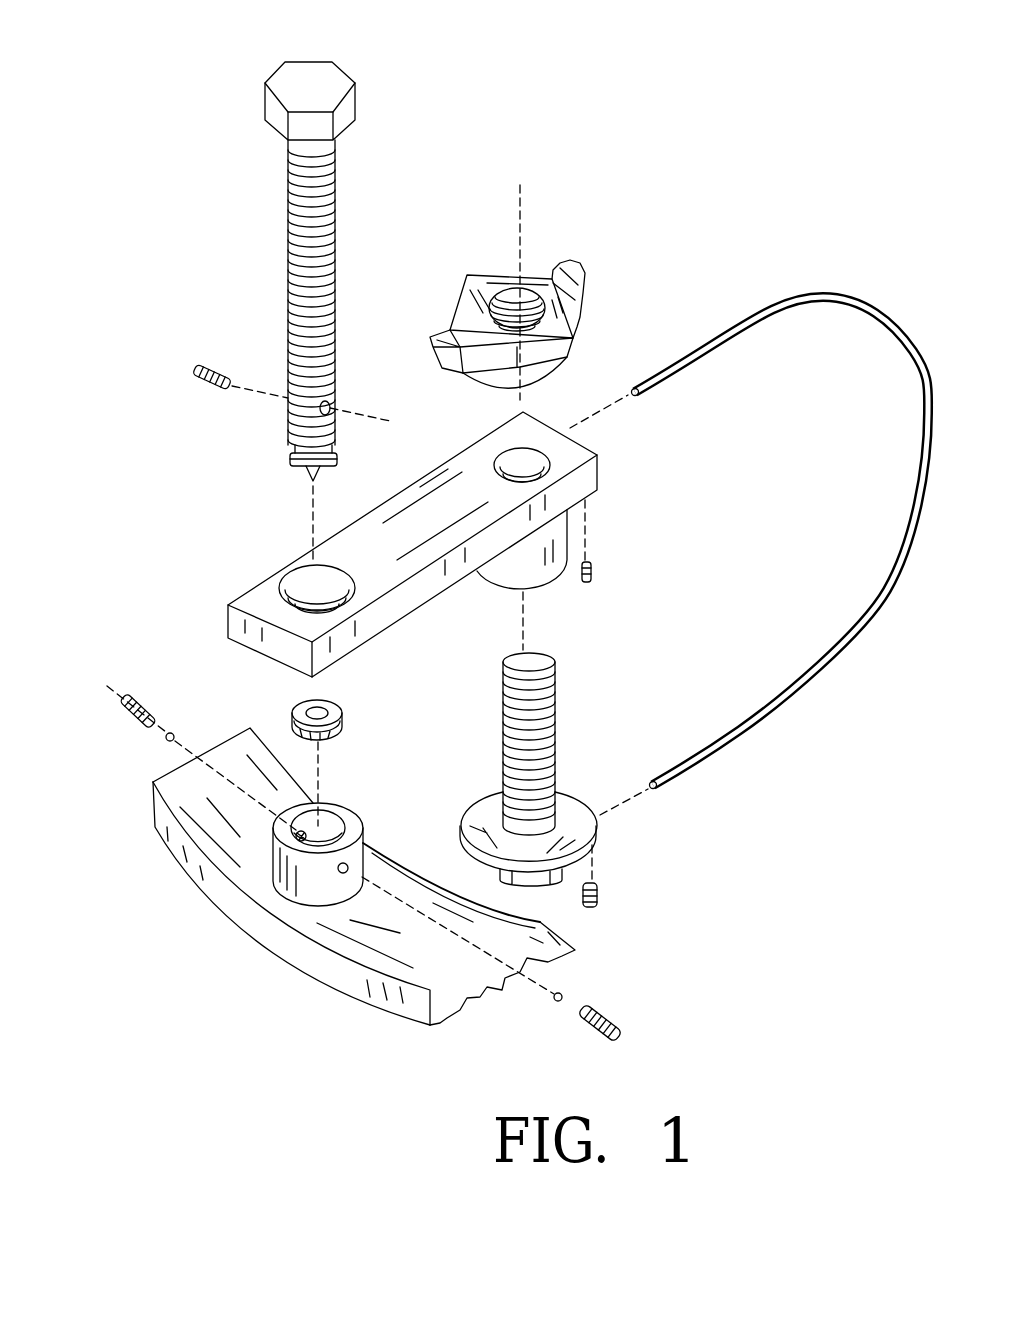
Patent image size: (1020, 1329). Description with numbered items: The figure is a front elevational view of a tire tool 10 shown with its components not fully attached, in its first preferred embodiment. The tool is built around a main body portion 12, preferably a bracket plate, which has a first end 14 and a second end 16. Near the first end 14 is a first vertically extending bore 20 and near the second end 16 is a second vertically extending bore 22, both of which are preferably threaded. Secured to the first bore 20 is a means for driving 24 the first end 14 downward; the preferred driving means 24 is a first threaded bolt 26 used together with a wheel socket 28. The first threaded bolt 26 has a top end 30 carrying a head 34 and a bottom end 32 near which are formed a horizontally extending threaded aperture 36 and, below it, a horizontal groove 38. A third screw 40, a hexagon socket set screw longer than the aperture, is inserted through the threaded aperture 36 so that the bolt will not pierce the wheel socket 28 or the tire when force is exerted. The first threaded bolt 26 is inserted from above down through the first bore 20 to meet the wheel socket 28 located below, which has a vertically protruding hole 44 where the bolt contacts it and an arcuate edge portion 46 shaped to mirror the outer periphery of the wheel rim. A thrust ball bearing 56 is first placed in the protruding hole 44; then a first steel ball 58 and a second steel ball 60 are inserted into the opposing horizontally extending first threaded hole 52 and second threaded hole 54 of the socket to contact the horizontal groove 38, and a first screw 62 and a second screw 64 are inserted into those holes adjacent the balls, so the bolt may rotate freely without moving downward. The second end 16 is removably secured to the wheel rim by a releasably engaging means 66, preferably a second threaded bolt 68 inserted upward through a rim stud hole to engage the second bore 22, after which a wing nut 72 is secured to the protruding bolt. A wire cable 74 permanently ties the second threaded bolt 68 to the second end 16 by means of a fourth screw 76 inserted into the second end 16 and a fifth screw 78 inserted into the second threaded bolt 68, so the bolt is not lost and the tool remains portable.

The tire tool 10 is at (150, 583).
The main body portion 12 is at (405, 525).
The first end 14 is at (218, 619).
The second end 16 is at (560, 408).
The first vertically extending bore 20 is at (300, 585).
The second vertically extending bore 22 is at (513, 450).
The means for driving 24 is at (215, 181).
The first threaded bolt 26 is at (327, 207).
The wheel socket 28 is at (341, 866).
The top end 30 is at (278, 67).
The bottom end 32 is at (340, 473).
The head 34 is at (327, 90).
The horizontally extending threaded aperture 36 is at (335, 405).
The horizontal groove 38 is at (295, 452).
The third screw 40 is at (200, 371).
The vertically protruding hole 44 is at (288, 853).
The arcuate edge portion 46 is at (453, 897).
The first threaded hole 52 is at (273, 840).
The second threaded hole 54 is at (357, 847).
The thrust ball bearing 56 is at (340, 710).
The first steel ball 58 is at (172, 733).
The second steel ball 60 is at (555, 1000).
The first screw 62 is at (130, 712).
The second screw 64 is at (618, 1030).
The releasably engaging means 66 is at (620, 767).
The second threaded bolt 68 is at (550, 720).
The wing nut 72 is at (487, 275).
The wire cable 74 is at (803, 292).
The fourth screw 76 is at (590, 565).
The fifth screw 78 is at (590, 907).